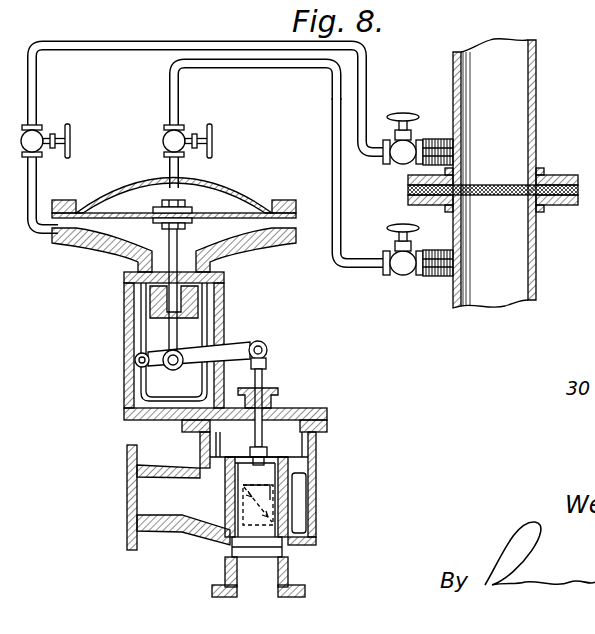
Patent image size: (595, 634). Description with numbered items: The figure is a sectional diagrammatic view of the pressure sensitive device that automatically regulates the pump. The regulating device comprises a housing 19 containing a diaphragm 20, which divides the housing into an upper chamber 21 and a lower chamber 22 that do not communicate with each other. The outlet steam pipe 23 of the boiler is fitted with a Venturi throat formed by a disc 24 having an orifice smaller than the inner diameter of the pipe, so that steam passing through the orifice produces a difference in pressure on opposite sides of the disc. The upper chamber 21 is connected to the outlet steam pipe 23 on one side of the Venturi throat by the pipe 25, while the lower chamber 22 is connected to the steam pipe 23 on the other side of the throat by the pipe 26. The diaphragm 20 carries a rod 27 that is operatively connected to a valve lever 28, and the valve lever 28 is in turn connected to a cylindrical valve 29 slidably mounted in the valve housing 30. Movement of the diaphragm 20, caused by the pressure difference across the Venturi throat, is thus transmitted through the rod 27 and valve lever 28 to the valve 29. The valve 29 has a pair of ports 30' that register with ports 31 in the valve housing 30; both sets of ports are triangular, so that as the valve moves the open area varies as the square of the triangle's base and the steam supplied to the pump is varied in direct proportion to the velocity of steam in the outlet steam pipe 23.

The housing 19 is at (90, 252).
The diaphragm 20 is at (252, 201).
The upper chamber 21 is at (200, 187).
The lower chamber 22 is at (244, 243).
The outlet steam pipe 23 is at (515, 76).
The disc 24 is at (478, 188).
The pipe 25 is at (364, 274).
The pipe 26 is at (364, 82).
The rod 27 is at (172, 333).
The valve lever 28 is at (258, 343).
The cylindrical valve 29 is at (268, 456).
The valve housing 30 is at (297, 497).
The ports 30' is at (239, 562).
The ports 31 is at (274, 521).